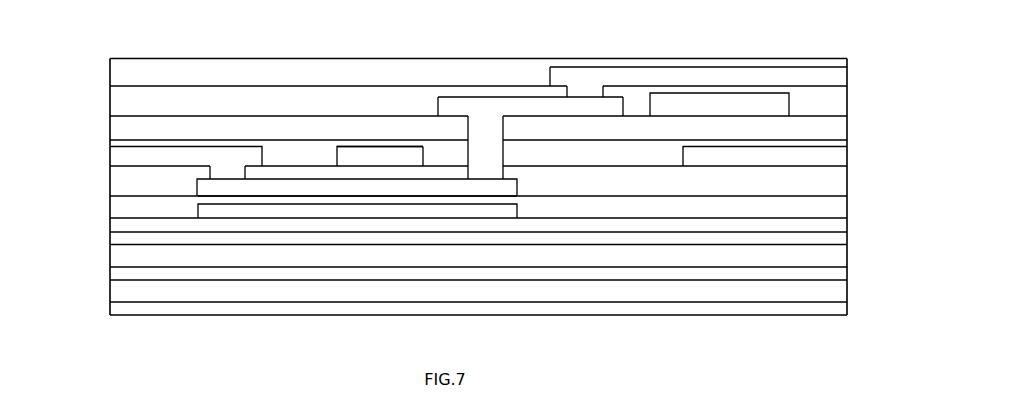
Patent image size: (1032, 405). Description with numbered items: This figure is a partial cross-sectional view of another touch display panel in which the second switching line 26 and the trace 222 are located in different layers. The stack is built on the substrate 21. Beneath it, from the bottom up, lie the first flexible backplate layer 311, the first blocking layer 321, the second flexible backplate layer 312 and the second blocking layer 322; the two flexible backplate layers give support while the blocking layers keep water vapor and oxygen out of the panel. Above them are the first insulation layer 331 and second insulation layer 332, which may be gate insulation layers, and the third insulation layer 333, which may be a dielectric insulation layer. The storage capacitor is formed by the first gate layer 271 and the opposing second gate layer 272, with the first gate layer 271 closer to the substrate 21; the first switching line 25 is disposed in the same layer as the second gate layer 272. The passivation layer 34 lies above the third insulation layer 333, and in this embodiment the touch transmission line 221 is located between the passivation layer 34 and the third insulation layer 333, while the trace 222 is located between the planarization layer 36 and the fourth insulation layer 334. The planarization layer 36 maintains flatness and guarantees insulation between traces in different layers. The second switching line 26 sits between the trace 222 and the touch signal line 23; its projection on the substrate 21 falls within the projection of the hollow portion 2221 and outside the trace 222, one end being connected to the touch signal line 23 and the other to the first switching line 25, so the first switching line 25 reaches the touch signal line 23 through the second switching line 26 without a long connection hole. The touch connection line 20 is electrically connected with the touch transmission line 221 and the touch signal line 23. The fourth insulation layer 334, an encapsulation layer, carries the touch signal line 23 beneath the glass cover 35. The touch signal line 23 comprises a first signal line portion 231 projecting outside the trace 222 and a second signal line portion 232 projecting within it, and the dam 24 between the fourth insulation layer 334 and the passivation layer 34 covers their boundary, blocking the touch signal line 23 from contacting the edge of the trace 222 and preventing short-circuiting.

The touch connection line 20 is at (343, 165).
The substrate 21 is at (832, 309).
The touch signal line 23 is at (705, 50).
The dam 24 is at (665, 108).
The first switching line 25 is at (307, 190).
The second switching line 26 is at (501, 103).
The passivation layer 34 is at (274, 155).
The glass cover 35 is at (133, 77).
The planarization layer 36 is at (134, 132).
The touch transmission line 221 is at (160, 155).
The trace 222 is at (384, 155).
The first signal line portion 231 is at (622, 78).
The second signal line portion 232 is at (738, 78).
The first gate layer 271 is at (307, 212).
The second gate layer 272 is at (353, 192).
The first flexible backplate layer 311 is at (130, 290).
The second flexible backplate layer 312 is at (130, 257).
The first blocking layer 321 is at (832, 276).
The second blocking layer 322 is at (832, 239).
The first insulation layer 331 is at (130, 227).
The second insulation layer 332 is at (832, 212).
The third insulation layer 333 is at (832, 186).
The fourth insulation layer 334 is at (134, 109).
The hollow portion 2221 is at (447, 157).